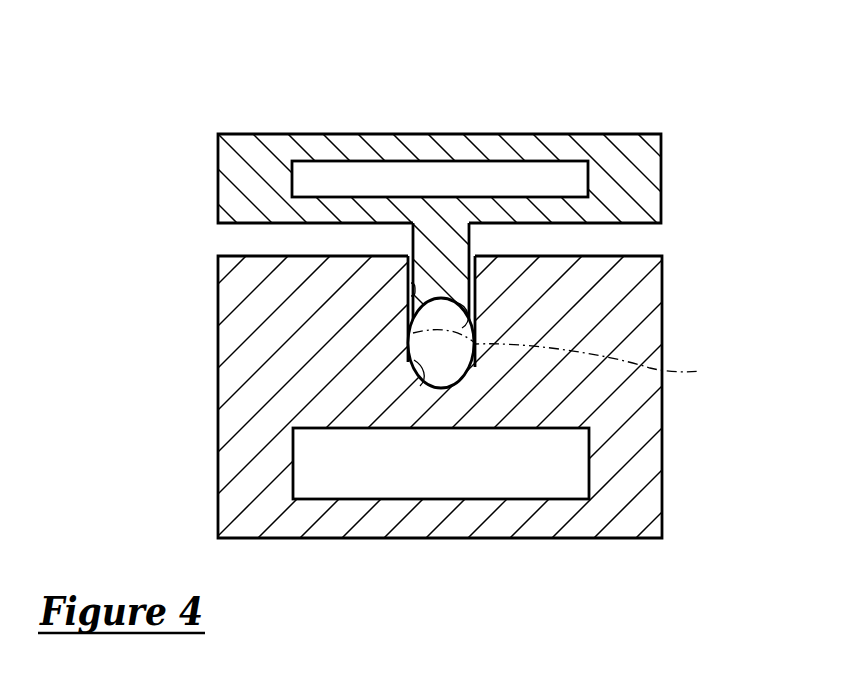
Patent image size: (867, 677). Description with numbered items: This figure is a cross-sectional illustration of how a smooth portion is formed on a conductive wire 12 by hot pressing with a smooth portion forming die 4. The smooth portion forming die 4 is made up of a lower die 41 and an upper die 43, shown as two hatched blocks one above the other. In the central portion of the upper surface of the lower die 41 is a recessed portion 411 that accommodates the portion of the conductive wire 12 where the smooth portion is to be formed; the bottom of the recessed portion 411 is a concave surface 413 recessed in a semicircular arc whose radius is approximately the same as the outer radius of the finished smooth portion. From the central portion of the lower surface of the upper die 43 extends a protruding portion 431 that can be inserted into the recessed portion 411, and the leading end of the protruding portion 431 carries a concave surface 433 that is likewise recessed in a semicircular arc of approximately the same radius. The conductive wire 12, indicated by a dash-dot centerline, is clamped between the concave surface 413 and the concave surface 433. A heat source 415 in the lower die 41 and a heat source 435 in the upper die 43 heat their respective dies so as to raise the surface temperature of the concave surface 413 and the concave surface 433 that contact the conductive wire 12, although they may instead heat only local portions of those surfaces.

The smooth portion forming die 4 is at (205, 104).
The conductive wire 12 is at (571, 358).
The lower die 41 is at (433, 350).
The recessed portion 411 is at (412, 290).
The concave surface 413 is at (420, 372).
The heat source 415 is at (580, 470).
The upper die 43 is at (473, 331).
The protruding portion 431 is at (460, 243).
The concave surface 433 is at (470, 330).
The heat source 435 is at (565, 165).